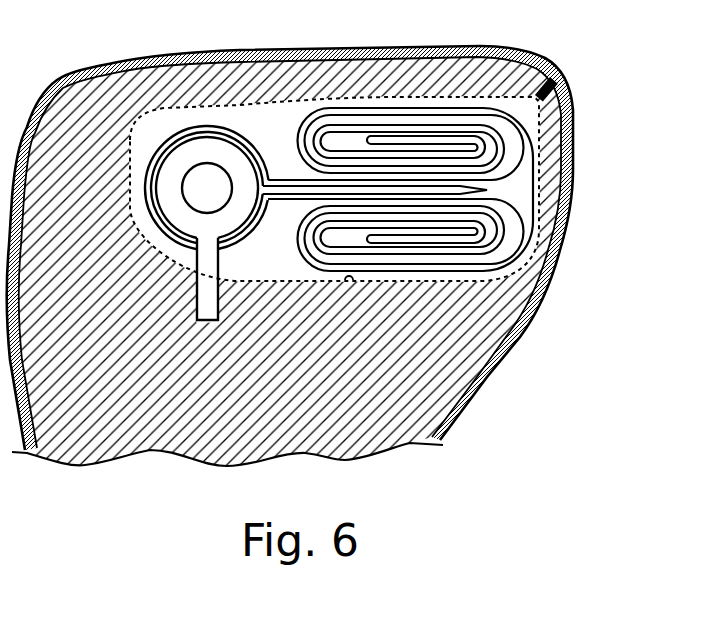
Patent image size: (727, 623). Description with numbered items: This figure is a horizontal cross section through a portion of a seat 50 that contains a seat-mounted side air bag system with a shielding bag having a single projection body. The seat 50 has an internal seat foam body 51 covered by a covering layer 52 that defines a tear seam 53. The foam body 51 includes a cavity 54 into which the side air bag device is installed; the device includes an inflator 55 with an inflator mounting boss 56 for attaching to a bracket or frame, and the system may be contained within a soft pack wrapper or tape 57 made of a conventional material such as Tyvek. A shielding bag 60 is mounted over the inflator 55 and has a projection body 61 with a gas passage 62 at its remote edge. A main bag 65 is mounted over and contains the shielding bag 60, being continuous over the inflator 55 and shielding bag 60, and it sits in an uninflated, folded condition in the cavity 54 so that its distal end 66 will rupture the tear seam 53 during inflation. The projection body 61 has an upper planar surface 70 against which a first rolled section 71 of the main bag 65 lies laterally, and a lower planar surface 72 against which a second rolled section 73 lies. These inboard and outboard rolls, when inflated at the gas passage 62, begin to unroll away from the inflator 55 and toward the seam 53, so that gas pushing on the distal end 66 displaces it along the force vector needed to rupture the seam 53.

The seat 50 is at (577, 361).
The seat foam body 51 is at (443, 385).
The covering layer 52 is at (553, 262).
The tear seam 53 is at (574, 84).
The cavity 54 is at (192, 110).
The inflator 55 is at (153, 182).
The inflator mounting boss 56 is at (197, 307).
The soft pack wrapper or tape 57 is at (350, 283).
The shielding bag 60 is at (163, 235).
The projection body 61 is at (272, 194).
The gas passage 62 is at (540, 181).
The main bag 65 is at (247, 119).
The distal end 66 is at (528, 147).
The upper planar surface 70 is at (296, 179).
The first rolled section 71 is at (403, 108).
The lower planar surface 72 is at (287, 200).
The second rolled section 73 is at (432, 268).